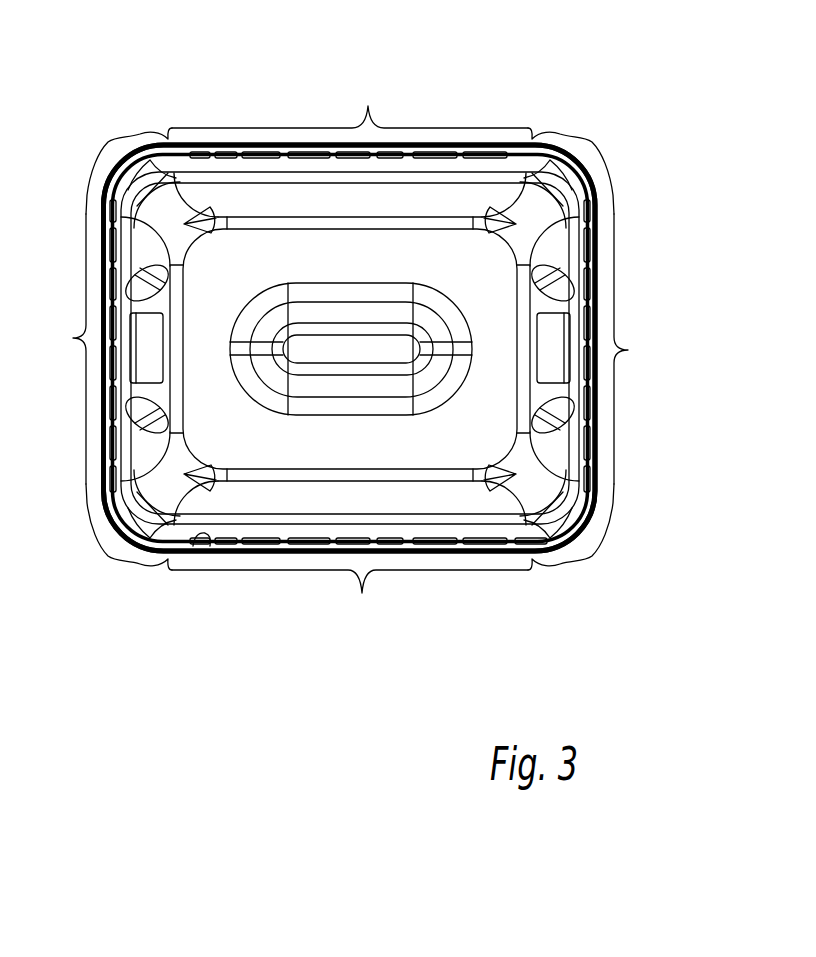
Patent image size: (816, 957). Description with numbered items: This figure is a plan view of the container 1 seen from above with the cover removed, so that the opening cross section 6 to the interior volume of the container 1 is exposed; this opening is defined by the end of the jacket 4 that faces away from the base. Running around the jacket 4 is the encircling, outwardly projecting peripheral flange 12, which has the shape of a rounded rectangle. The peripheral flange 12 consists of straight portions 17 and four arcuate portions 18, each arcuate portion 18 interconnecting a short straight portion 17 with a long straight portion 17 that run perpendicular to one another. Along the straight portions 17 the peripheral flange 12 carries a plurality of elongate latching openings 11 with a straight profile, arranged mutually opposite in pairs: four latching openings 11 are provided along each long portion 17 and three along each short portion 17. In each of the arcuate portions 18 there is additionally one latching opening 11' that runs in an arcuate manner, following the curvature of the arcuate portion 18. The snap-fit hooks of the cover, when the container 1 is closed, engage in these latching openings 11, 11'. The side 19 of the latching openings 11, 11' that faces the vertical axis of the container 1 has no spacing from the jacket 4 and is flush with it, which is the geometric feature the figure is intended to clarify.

The container 1 is at (597, 108).
The jacket 4 is at (138, 575).
The opening cross section 6 is at (440, 209).
The latching opening 11 is at (350, 306).
The latching opening 11' is at (568, 574).
The peripheral flange 12 is at (623, 192).
The straight portion 17 is at (658, 351).
The arcuate portion 18 is at (620, 143).
The side of the latching openings 19 is at (198, 573).